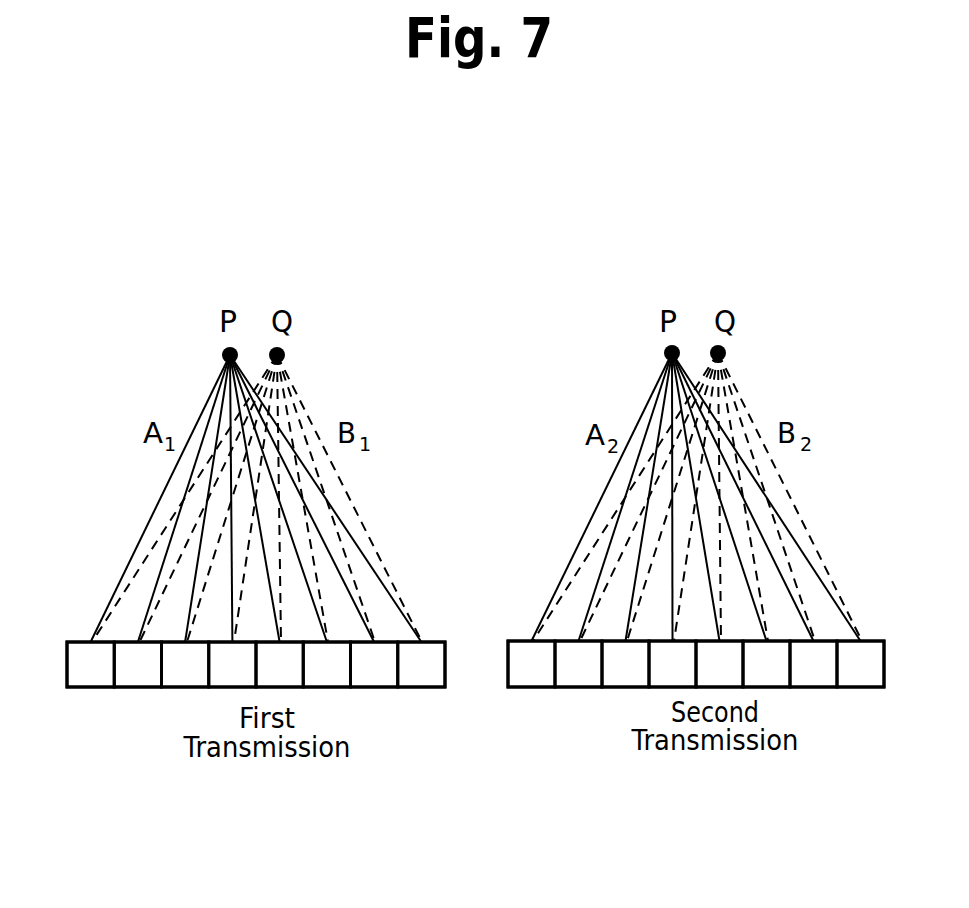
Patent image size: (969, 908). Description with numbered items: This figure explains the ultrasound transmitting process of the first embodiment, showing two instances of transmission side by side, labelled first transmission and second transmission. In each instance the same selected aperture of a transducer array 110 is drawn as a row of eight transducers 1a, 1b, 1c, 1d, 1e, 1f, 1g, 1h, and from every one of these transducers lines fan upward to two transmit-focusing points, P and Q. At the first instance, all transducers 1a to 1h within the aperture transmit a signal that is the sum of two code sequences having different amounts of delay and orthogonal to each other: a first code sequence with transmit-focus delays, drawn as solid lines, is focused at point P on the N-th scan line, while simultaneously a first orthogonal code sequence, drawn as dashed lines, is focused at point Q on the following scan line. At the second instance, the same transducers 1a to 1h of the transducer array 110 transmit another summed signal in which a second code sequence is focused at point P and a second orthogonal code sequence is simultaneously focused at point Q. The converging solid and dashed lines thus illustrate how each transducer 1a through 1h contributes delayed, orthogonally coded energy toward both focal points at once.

The transducer array 110 is at (102, 706).
The transducer 1a is at (311, 664).
The transducer 1b is at (358, 664).
The transducer 1c is at (406, 664).
The transducer 1d is at (452, 664).
The transducer 1e is at (499, 664).
The transducer 1f is at (546, 664).
The transducer 1g is at (594, 664).
The transducer 1h is at (641, 664).